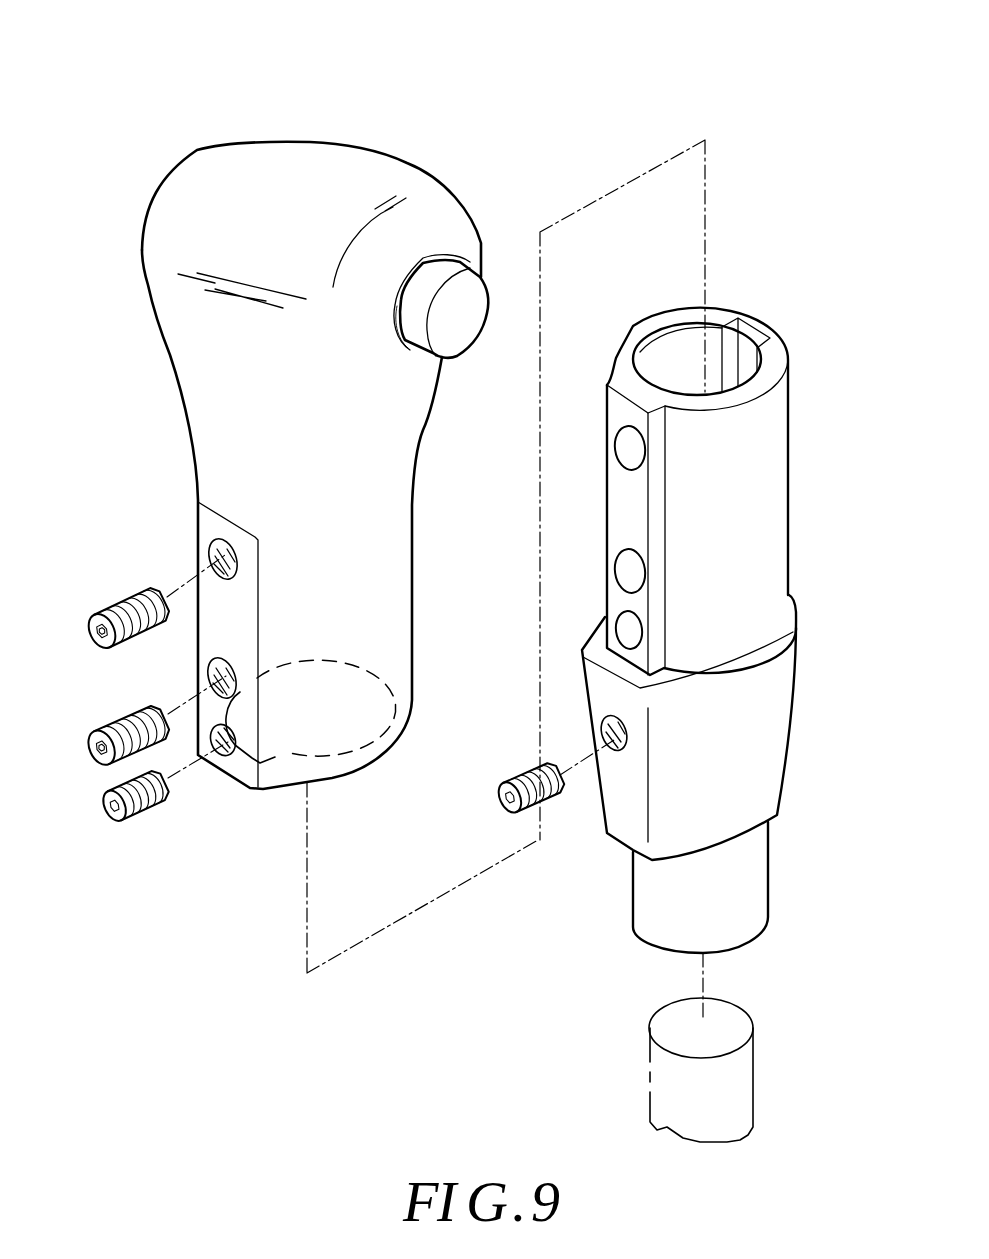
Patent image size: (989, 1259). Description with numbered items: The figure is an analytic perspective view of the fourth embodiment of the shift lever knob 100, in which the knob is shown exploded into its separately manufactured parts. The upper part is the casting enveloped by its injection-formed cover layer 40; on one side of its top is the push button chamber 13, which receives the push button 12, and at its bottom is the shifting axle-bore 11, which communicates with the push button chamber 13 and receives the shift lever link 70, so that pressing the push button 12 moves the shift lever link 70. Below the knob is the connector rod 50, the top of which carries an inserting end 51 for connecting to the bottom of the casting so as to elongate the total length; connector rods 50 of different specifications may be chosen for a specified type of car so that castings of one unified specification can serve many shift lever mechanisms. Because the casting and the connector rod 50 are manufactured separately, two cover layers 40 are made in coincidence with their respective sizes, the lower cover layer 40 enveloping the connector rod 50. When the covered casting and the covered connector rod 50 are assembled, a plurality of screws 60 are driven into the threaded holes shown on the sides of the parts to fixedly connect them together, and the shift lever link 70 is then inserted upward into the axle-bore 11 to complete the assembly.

The shift lever knob 100 is at (97, 47).
The cover layer 40 is at (322, 182).
The push button 12 is at (460, 330).
The push button chamber 13 is at (408, 352).
The shifting axle-bore 11 is at (353, 748).
The screw or pin 60 is at (124, 594).
The inserting end 51 is at (760, 493).
The connector rod 50 is at (748, 873).
The shift lever link 70 is at (718, 1078).